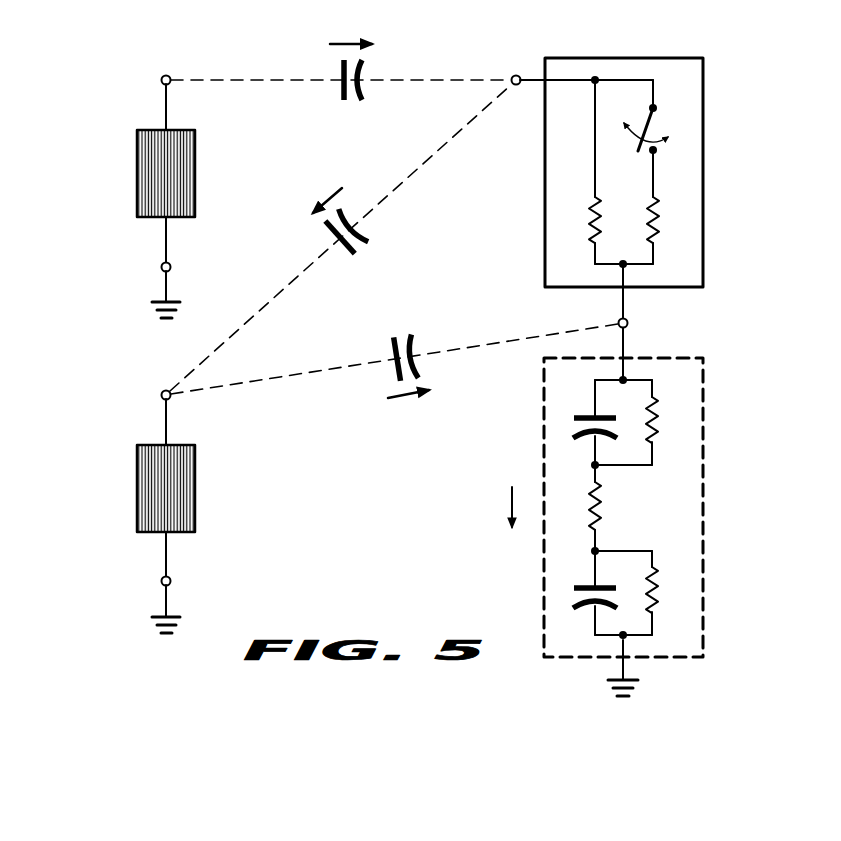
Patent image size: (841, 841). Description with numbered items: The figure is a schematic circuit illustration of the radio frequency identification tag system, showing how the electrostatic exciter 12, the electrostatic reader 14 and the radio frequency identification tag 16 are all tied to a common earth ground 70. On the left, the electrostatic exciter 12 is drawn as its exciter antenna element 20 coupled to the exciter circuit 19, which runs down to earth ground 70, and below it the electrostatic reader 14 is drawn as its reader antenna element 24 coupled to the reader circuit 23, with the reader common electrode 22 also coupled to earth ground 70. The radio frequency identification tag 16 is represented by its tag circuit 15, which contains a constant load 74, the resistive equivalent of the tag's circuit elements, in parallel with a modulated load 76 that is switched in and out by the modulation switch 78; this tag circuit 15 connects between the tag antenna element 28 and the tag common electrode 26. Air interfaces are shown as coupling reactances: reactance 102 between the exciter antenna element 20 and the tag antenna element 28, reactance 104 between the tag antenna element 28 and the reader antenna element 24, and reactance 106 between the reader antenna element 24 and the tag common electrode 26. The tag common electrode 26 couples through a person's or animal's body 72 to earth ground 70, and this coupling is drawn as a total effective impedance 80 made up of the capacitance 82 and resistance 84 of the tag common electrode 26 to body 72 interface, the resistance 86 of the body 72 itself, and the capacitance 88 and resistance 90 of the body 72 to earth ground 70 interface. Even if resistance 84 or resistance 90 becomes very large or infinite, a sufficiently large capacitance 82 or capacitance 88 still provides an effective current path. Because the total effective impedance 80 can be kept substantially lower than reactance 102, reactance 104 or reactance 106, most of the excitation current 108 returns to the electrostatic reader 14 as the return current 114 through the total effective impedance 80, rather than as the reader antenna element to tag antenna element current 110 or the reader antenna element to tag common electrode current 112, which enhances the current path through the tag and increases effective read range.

The electrostatic exciter 12 is at (126, 184).
The electrostatic reader 14 is at (126, 498).
The tag circuit 15 is at (704, 171).
The radio frequency identification tag 16 is at (656, 174).
The exciter circuit 19 is at (137, 172).
The exciter antenna element 20 is at (161, 80).
The reader common electrode 22 is at (161, 581).
The reader circuit 23 is at (137, 487).
The reader antenna element 24 is at (161, 395).
The tag common electrode 26 is at (630, 323).
The tag antenna element 28 is at (515, 74).
The earth ground 70 is at (152, 314).
The body 72 is at (669, 492).
The constant load 74 is at (586, 204).
The modulated load 76 is at (662, 233).
The modulation switch 78 is at (666, 123).
The total effective impedance 80 is at (704, 506).
The capacitance 82 is at (578, 415).
The resistance 84 is at (662, 408).
The resistance 86 is at (604, 508).
The capacitance 88 is at (578, 585).
The resistance 90 is at (662, 578).
The reactance 102 is at (352, 103).
The reactance 104 is at (364, 248).
The reactance 106 is at (398, 334).
The excitation current 108 is at (348, 41).
The reader antenna element to tag antenna element current 110 is at (327, 201).
The reader antenna element to tag common electrode current 112 is at (407, 400).
The return current 114 is at (509, 504).